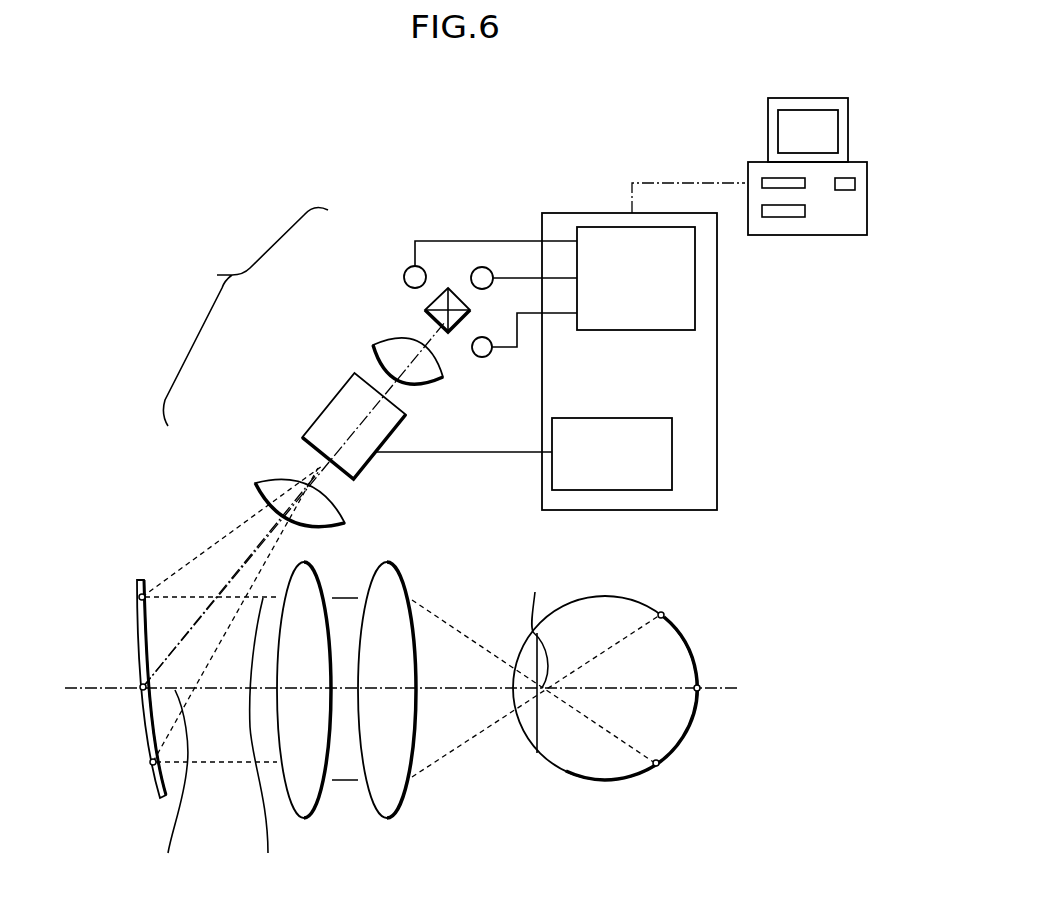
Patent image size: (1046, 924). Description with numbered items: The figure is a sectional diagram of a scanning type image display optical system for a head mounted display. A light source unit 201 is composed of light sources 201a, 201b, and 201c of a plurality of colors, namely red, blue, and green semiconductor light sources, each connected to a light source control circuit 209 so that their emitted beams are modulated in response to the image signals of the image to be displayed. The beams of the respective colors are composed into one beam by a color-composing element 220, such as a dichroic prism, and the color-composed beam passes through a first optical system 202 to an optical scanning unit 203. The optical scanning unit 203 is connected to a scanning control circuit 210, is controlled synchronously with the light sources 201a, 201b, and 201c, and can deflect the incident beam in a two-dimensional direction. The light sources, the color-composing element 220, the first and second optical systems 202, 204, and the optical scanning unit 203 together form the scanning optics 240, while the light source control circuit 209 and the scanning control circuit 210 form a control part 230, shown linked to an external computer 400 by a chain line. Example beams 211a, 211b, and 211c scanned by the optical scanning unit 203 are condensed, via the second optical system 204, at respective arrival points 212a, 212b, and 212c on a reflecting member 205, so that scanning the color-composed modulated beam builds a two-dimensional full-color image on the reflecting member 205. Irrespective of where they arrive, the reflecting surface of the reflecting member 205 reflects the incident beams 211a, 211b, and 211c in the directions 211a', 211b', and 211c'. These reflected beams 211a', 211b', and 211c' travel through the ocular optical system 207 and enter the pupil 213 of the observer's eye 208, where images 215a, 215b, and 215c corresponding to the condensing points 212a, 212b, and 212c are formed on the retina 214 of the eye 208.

The light source unit 201 is at (472, 291).
The light source 201a is at (481, 267).
The light source 201b is at (414, 266).
The light source 201c is at (480, 357).
The first optical system 202 is at (387, 337).
The optical scanning unit 203 is at (337, 395).
The second optical system 204 is at (268, 478).
The reflecting member 205 is at (137, 639).
The ocular optical system 207 is at (405, 825).
The eye 208 is at (575, 777).
The light source control circuit 209 is at (695, 277).
The scanning control circuit 210 is at (672, 452).
The beam 211a is at (231, 578).
The beam 211b is at (232, 522).
The beam 211c is at (219, 615).
The reflected beam 211a' is at (169, 789).
The reflected beam 211b' is at (270, 743).
The reflected beam 211c' is at (216, 802).
The arrival point 212a is at (141, 690).
The arrival point 212b is at (139, 595).
The arrival point 212c is at (151, 765).
The pupil 213 is at (537, 658).
The retina 214 is at (690, 727).
The image 215a is at (699, 687).
The image 215b is at (657, 766).
The image 215c is at (662, 612).
The color-composing element 220 is at (425, 309).
The control part 230 is at (673, 361).
The scanning optics 240 is at (245, 317).
The computer 400 is at (750, 165).